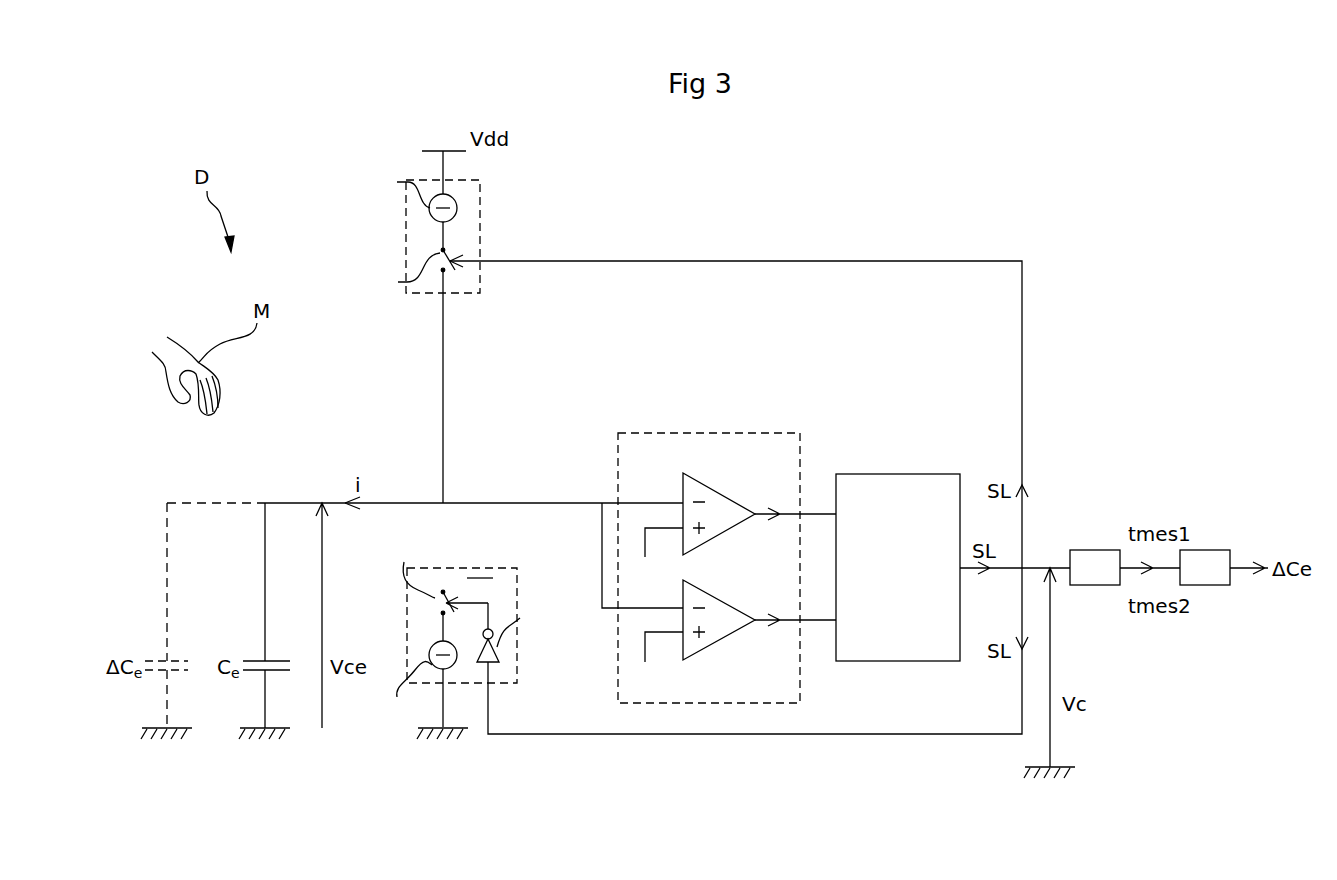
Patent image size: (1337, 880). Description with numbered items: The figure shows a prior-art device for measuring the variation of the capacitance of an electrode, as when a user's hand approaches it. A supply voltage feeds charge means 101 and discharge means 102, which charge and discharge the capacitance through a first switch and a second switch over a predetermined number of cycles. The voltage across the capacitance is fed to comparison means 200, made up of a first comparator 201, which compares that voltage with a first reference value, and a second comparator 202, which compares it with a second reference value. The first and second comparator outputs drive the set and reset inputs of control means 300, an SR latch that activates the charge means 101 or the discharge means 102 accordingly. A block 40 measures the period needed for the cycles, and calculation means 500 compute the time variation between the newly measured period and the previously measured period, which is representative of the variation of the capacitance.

The charge means 101 is at (482, 215).
The discharge means 102 is at (483, 568).
The comparison means 200 is at (727, 545).
The first comparator 201 is at (711, 486).
The second comparator 202 is at (711, 592).
The control means 300 is at (912, 474).
The measurement unit 40 is at (1095, 567).
The calculation means 500 is at (1205, 567).